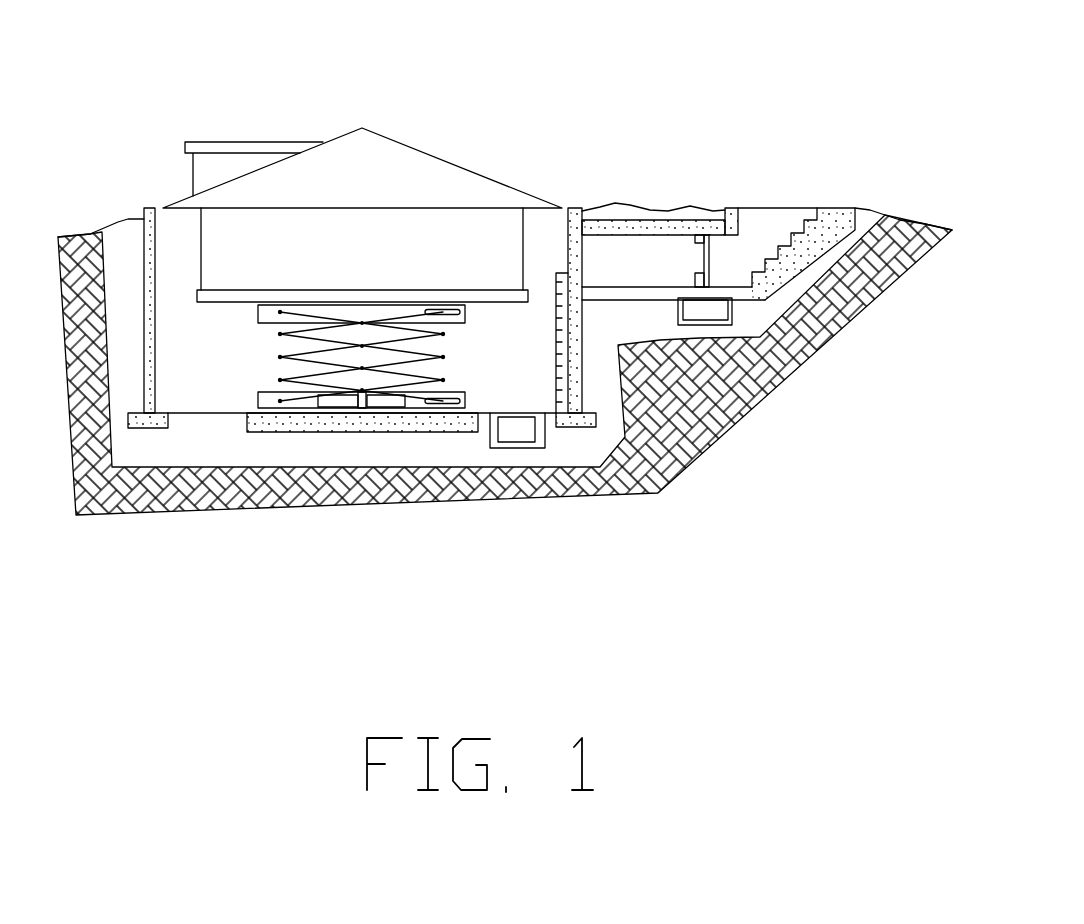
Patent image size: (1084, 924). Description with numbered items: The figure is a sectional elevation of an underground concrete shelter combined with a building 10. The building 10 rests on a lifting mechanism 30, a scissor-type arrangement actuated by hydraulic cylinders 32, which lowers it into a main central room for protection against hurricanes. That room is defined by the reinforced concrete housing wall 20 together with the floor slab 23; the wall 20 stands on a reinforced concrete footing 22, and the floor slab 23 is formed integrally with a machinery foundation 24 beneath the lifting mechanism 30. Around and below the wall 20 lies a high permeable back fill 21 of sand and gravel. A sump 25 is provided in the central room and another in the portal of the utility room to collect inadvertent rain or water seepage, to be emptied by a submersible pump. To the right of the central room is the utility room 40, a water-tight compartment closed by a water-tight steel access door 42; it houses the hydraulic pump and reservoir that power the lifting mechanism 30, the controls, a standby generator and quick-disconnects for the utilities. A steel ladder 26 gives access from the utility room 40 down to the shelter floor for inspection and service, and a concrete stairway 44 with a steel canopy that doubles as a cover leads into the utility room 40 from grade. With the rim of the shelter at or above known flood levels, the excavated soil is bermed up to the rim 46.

The building 10 is at (362, 128).
The housing wall 20 is at (148, 210).
The high permeable back fill 21 is at (123, 218).
The footing 22 is at (145, 428).
The floor slab 23 is at (203, 422).
The machinery foundation 24 is at (310, 430).
The sump 25 is at (490, 446).
The steel ladder 26 is at (558, 350).
The lifting mechanism 30 is at (466, 388).
The hydraulic cylinders 32 is at (368, 408).
The utility room 40 is at (643, 253).
The access door 42 is at (710, 262).
The concrete stairway 44 is at (830, 207).
The burmed-up rim 46 is at (922, 222).